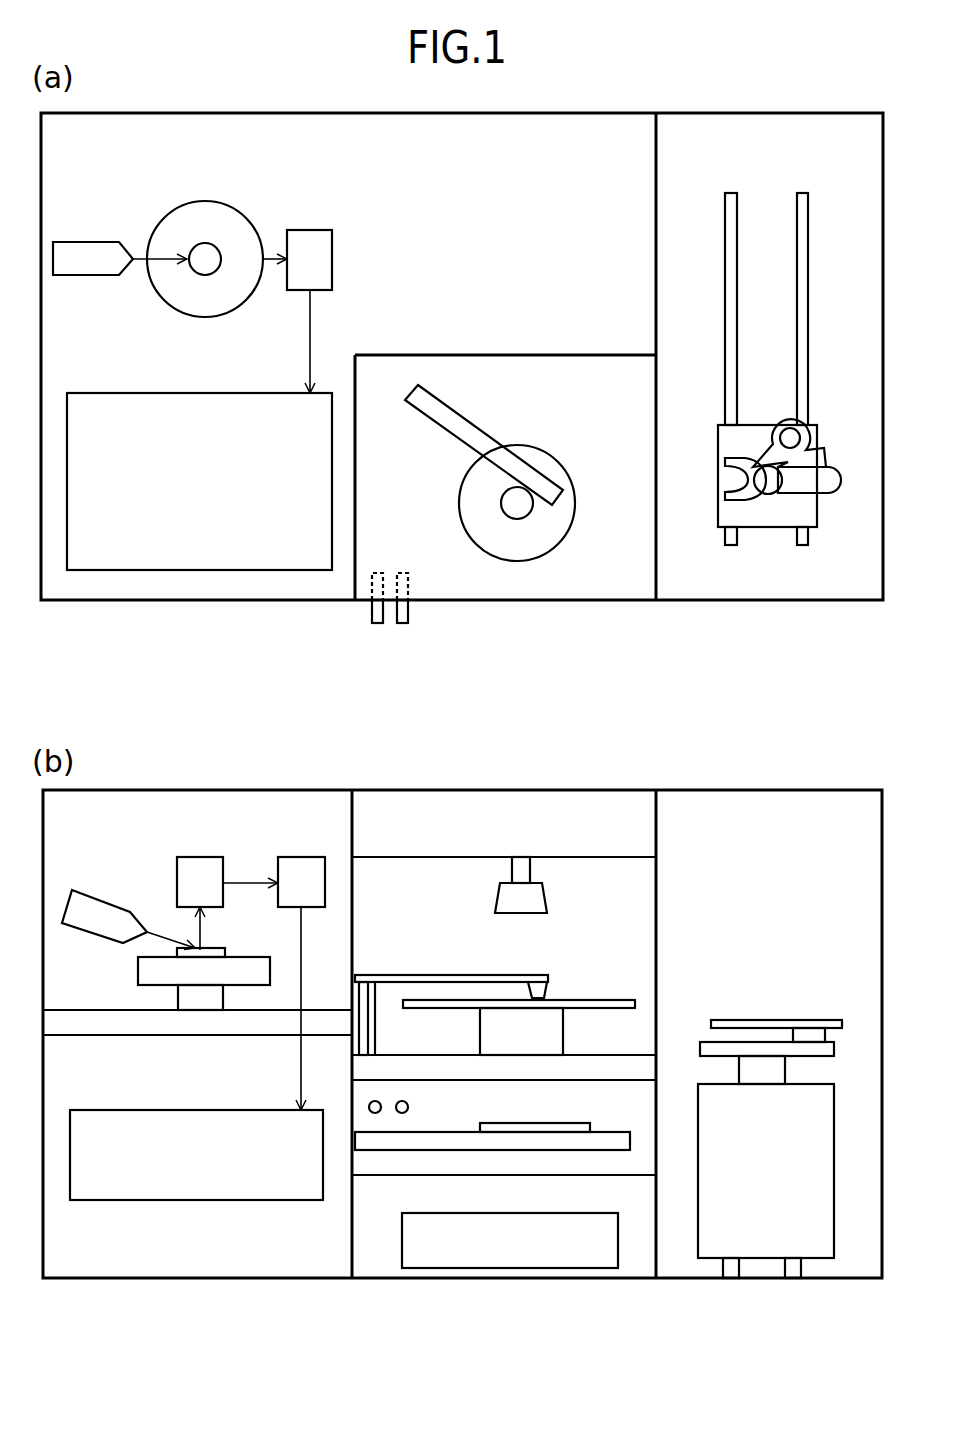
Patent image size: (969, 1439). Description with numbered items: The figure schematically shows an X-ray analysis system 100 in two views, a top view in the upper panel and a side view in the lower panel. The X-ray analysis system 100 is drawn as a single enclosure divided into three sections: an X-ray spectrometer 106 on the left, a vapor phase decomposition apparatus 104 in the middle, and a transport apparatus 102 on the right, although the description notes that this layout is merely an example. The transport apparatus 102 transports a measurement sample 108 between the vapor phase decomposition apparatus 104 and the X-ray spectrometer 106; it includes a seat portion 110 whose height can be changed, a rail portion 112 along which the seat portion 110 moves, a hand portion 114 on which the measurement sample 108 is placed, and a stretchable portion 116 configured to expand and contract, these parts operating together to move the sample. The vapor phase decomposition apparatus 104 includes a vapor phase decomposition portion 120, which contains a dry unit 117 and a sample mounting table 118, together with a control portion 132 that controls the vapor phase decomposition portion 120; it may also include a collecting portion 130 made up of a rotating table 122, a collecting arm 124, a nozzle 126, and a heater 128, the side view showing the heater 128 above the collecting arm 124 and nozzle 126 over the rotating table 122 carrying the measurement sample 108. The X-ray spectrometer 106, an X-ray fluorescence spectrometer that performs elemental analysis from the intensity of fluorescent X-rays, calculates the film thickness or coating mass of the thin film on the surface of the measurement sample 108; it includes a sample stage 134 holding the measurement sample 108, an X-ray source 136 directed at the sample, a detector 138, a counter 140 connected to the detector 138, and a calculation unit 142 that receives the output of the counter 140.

The X-ray analysis system 100 is at (542, 95).
The transport apparatus 102 is at (735, 613).
The vapor phase decomposition apparatus 104 is at (467, 613).
The X-ray spectrometer 106 is at (192, 613).
The measurement sample 108 is at (205, 275).
The seat portion 110 is at (777, 522).
The rail portion 112 is at (735, 215).
The hand portion 114 is at (740, 478).
The stretchable portion 116 is at (812, 455).
The dry unit 117 is at (362, 612).
The sample mounting table 118 is at (600, 1138).
The vapor phase decomposition portion 120 is at (452, 1178).
The rotating table 122 is at (565, 1040).
The collecting arm 124 is at (478, 425).
The nozzle 126 is at (548, 992).
The heater 128 is at (537, 508).
The collecting portion 130 is at (430, 857).
The control portion 132 is at (545, 1200).
The sample stage 134 is at (205, 200).
The X-ray source 136 is at (98, 242).
The detector 138 is at (197, 857).
The counter 140 is at (310, 230).
The calculation unit 142 is at (122, 393).